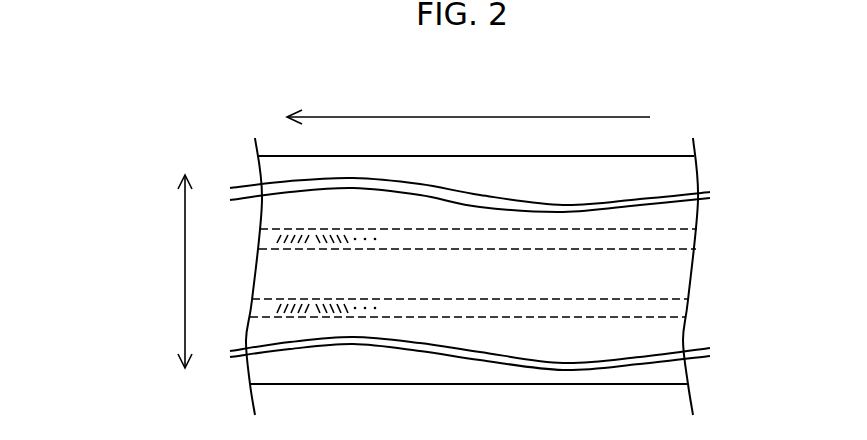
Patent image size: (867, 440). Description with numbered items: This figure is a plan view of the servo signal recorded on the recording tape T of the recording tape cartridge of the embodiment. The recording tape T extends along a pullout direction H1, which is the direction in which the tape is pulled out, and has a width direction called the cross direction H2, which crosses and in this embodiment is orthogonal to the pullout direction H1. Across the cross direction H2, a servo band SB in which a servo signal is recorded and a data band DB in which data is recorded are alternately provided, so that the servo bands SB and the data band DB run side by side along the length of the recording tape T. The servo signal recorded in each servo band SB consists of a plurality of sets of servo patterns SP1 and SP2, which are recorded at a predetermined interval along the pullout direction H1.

The recording tape T is at (687, 174).
The servo band SB is at (690, 240).
The data band DB is at (686, 272).
The servo pattern SP1 is at (280, 302).
The servo pattern SP2 is at (318, 302).
The pullout direction H1 is at (478, 117).
The cross direction H2 is at (185, 272).